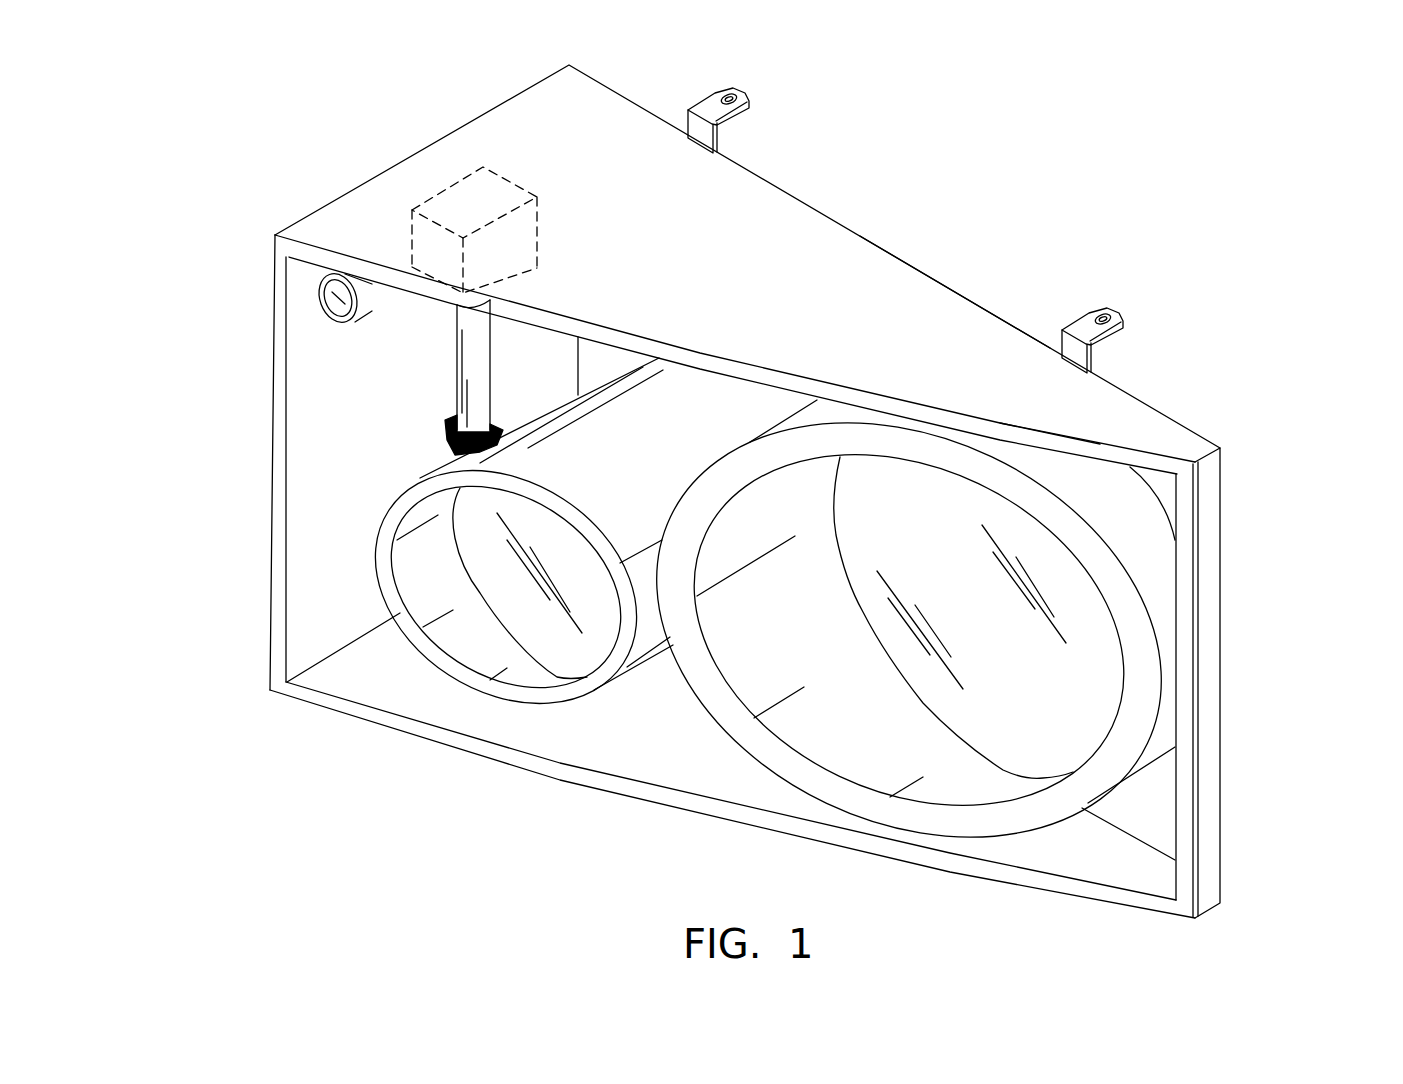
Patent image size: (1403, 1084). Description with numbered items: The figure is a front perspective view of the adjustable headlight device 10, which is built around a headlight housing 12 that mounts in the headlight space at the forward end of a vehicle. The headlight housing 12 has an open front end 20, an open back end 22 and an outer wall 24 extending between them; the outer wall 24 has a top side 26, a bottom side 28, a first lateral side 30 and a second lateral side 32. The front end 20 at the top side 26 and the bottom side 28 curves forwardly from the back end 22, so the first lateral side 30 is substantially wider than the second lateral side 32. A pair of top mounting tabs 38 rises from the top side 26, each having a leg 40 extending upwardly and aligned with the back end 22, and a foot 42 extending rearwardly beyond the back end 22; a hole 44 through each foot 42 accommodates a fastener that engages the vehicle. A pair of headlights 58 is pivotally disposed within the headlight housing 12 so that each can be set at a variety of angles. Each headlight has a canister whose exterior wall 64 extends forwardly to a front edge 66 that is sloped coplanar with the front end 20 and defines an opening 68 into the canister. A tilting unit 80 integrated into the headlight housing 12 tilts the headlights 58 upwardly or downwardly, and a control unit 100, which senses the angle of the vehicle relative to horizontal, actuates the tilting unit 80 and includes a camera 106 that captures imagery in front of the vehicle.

The adjustable headlight device 10 is at (1088, 153).
The headlight housing 12 is at (432, 94).
The front end 20 is at (385, 713).
The back end 22 is at (1010, 323).
The outer wall 24 is at (863, 282).
The top side 26 is at (628, 109).
The bottom side 28 is at (653, 840).
The first lateral side 30 is at (250, 227).
The second lateral side 32 is at (1230, 790).
The top mounting tabs 38 is at (968, 215).
The leg 40 is at (718, 138).
The foot 42 is at (752, 106).
The hole 44 is at (1108, 285).
The headlights 58 is at (548, 648).
The exterior wall 64 is at (1130, 558).
The front edge 66 is at (1080, 795).
The opening 68 is at (868, 709).
The tilting unit 80 is at (412, 210).
The control unit 100 is at (324, 356).
The camera 106 is at (343, 307).